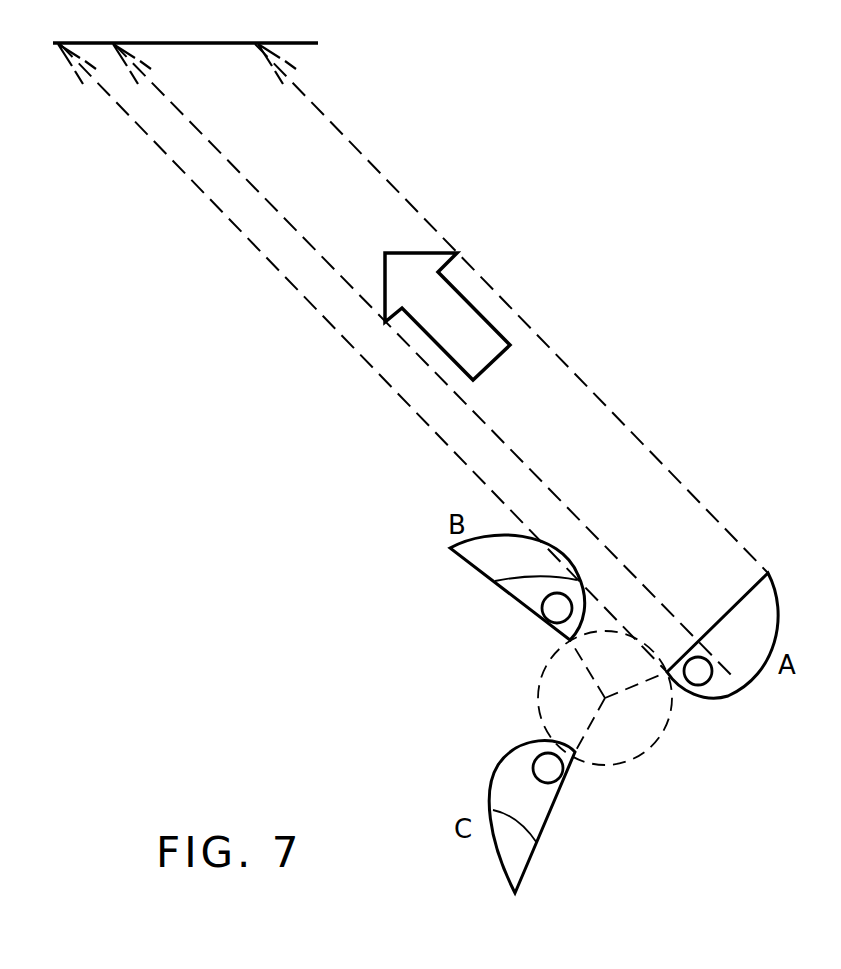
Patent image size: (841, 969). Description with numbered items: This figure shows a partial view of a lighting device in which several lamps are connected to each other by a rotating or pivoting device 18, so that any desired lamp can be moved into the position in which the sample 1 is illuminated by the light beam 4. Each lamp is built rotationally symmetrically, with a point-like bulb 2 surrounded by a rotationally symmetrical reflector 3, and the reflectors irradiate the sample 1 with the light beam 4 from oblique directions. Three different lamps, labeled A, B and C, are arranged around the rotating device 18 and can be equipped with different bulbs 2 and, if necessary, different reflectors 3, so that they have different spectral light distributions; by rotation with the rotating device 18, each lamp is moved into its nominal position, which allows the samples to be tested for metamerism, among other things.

The sample 1 is at (113, 44).
The bulb 2 is at (708, 684).
The reflector 3 is at (728, 694).
The light beam 4 is at (447, 316).
The rotating or pivoting device 18 is at (605, 698).